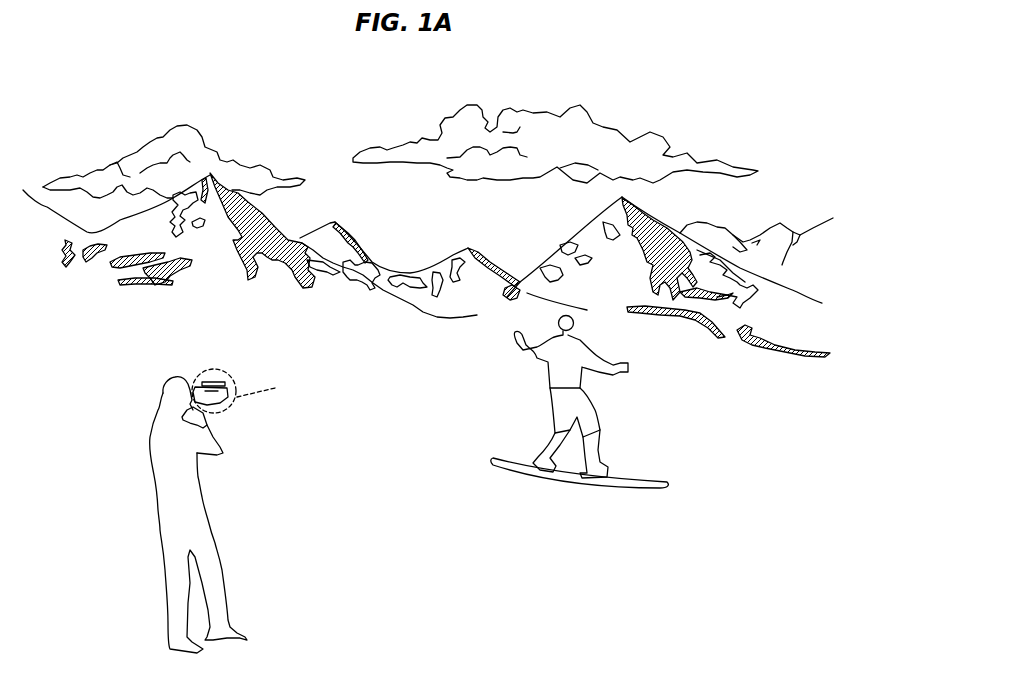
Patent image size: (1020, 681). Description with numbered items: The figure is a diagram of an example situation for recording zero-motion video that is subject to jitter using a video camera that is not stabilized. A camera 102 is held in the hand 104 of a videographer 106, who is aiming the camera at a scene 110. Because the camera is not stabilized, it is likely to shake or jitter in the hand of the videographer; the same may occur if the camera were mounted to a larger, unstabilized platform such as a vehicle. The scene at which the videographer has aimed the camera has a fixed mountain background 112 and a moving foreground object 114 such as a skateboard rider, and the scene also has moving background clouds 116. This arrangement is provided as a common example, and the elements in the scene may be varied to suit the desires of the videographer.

The camera 102 is at (215, 381).
The hand 104 is at (222, 423).
The videographer 106 is at (229, 492).
The scene 110 is at (620, 570).
The fixed mountain background 112 is at (552, 233).
The moving foreground object 114 is at (648, 422).
The moving background clouds 116 is at (403, 133).